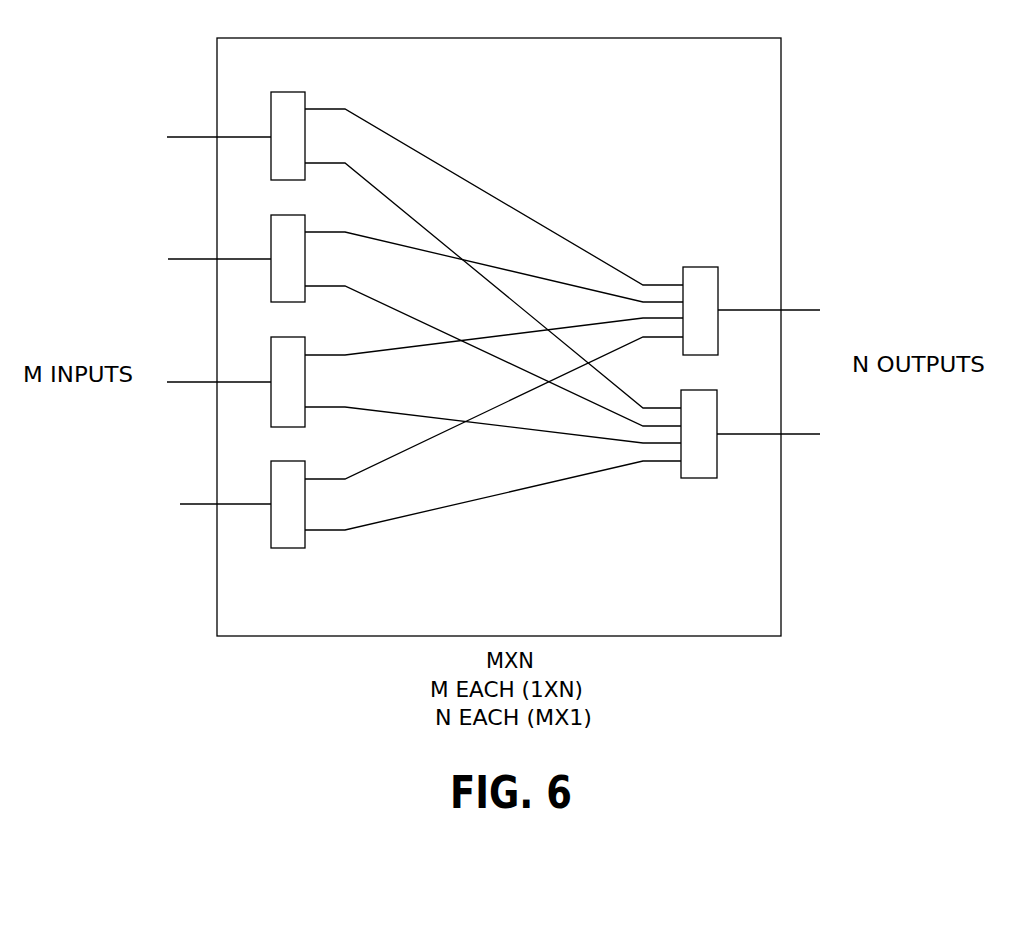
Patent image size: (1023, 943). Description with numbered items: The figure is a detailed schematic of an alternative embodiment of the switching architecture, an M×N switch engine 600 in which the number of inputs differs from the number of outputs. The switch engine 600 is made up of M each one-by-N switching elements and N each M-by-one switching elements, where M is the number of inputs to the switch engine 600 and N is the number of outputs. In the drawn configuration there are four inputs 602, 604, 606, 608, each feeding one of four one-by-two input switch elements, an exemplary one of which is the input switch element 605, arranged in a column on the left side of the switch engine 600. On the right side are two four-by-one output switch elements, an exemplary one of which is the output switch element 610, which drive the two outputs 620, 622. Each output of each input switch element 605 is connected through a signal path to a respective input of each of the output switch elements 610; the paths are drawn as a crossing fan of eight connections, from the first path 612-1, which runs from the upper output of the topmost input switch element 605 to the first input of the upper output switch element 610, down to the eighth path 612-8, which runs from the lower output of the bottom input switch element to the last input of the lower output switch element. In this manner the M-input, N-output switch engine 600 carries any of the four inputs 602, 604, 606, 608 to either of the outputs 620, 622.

The M×N switch engine 600 is at (763, 72).
The input 1 602 is at (190, 137).
The input 2 604 is at (205, 259).
The input 3 606 is at (212, 382).
The input M 608 is at (205, 504).
The 1×2 input switch element 605 is at (288, 92).
The 4×1 output switch element 610 is at (700, 267).
The interconnection path 1 612-1 is at (422, 155).
The interconnection path 8 612-8 is at (430, 512).
The output 1 620 is at (800, 310).
The output N 622 is at (800, 434).